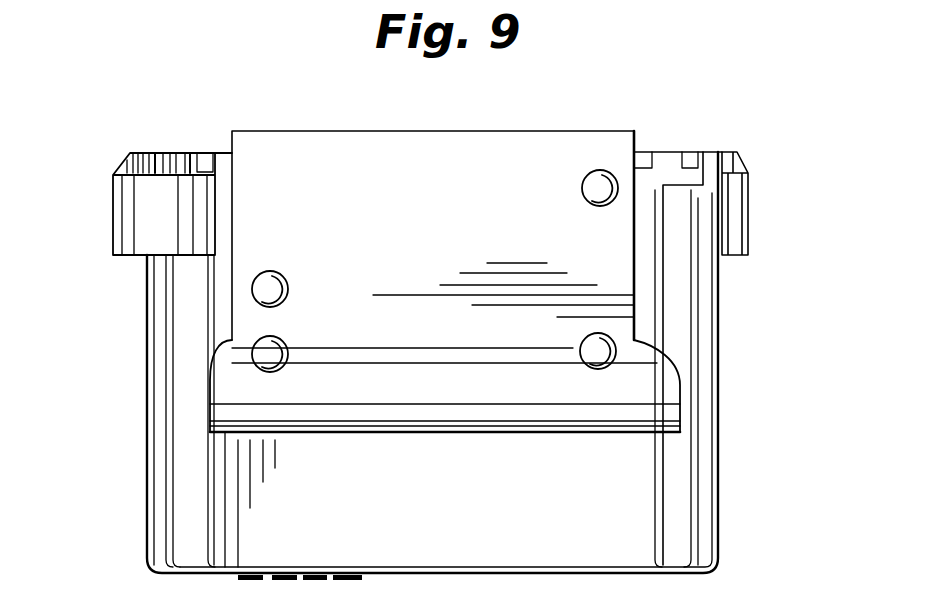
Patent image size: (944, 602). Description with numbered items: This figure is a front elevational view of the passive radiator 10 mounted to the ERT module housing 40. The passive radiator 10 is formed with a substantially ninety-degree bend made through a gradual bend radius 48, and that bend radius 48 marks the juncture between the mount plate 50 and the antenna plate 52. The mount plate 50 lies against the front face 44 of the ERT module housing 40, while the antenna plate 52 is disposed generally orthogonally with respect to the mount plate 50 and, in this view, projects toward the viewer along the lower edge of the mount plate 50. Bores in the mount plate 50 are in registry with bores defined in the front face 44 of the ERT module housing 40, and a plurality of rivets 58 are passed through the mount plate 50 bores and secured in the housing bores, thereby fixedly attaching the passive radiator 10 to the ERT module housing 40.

The passive radiator 10 is at (292, 123).
The ERT module housing 40 is at (174, 143).
The front face 44 is at (257, 487).
The bend radius 48 is at (233, 405).
The mount plate 50 is at (493, 150).
The antenna plate 52 is at (613, 433).
The rivets 58 is at (262, 353).